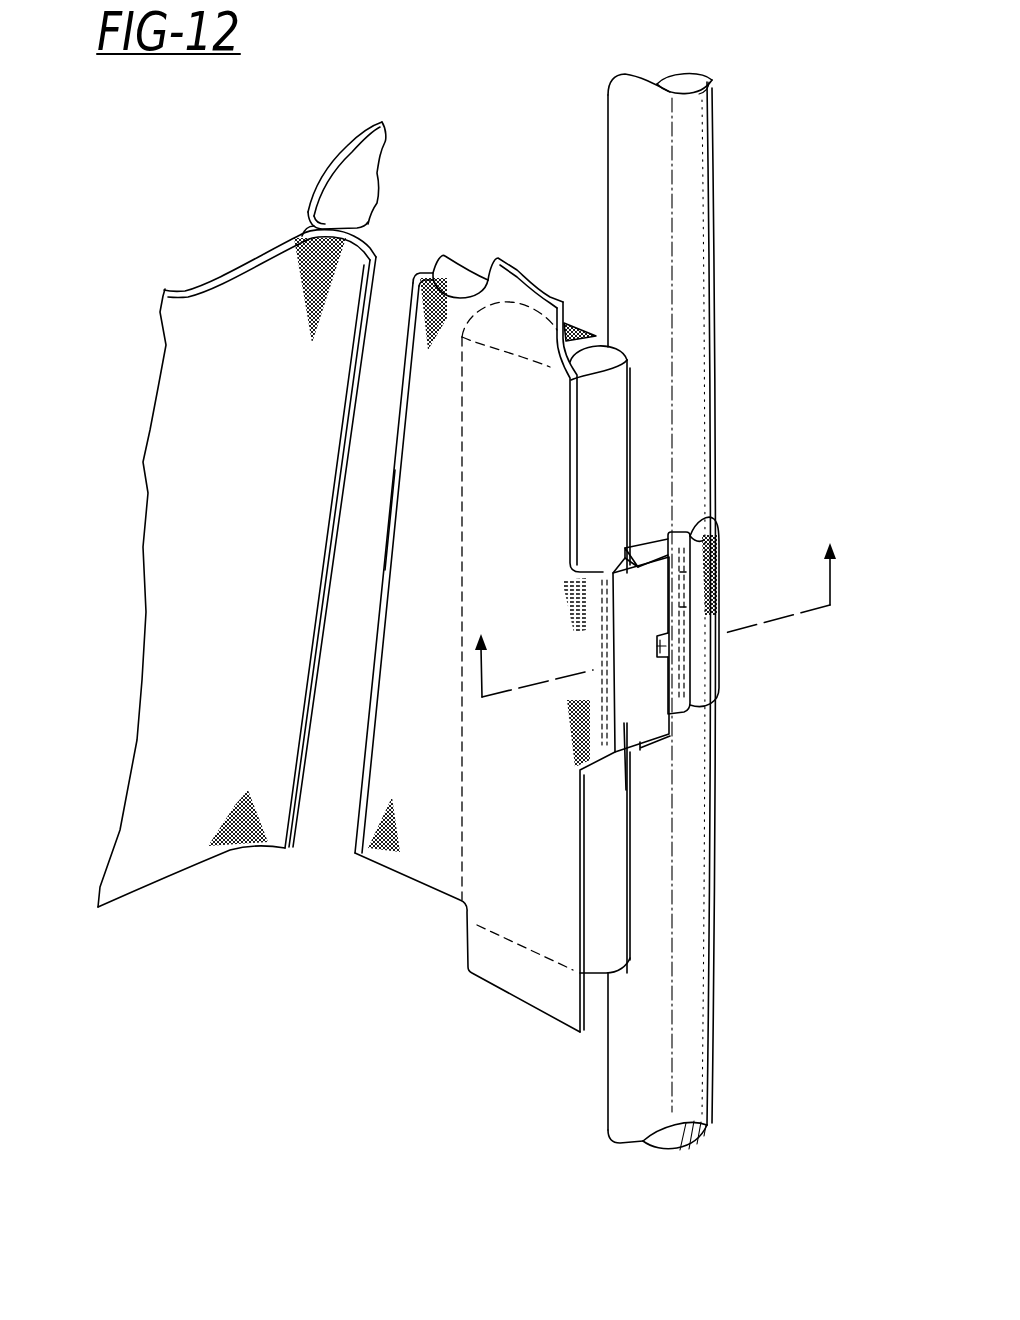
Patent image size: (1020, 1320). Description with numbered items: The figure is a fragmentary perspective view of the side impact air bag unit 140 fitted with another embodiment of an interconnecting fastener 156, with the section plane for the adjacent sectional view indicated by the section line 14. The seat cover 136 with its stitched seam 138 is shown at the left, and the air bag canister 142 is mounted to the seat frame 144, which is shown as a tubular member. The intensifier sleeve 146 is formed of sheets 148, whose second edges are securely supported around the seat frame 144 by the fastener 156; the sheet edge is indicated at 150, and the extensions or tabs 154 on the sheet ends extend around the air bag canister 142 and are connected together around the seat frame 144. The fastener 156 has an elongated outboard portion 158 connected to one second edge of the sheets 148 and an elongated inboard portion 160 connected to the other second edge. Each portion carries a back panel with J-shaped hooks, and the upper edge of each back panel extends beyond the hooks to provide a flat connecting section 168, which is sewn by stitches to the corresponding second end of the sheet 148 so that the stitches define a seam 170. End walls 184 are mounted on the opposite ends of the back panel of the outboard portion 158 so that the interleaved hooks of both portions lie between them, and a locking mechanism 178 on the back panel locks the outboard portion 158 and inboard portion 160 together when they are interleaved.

The section line 14- 14 is at (664, 638).
The cover 136 is at (358, 173).
The seam 138 is at (378, 221).
The air bag unit 140 is at (236, 184).
The air bag canister 142 is at (597, 400).
The seat frame 144 is at (688, 167).
The intensifier sleeve 146 is at (545, 258).
The sheets 148 is at (579, 323).
The plate edge 150 is at (393, 575).
The extensions or tabs 154 is at (707, 673).
The fastener 156 is at (660, 762).
The outboard portion 158 is at (640, 588).
The inboard portion 160 is at (688, 533).
The flat connecting section 168 is at (622, 748).
The seam 170 is at (683, 607).
The locking mechanism 178 is at (680, 634).
The end wall 184 is at (643, 547).